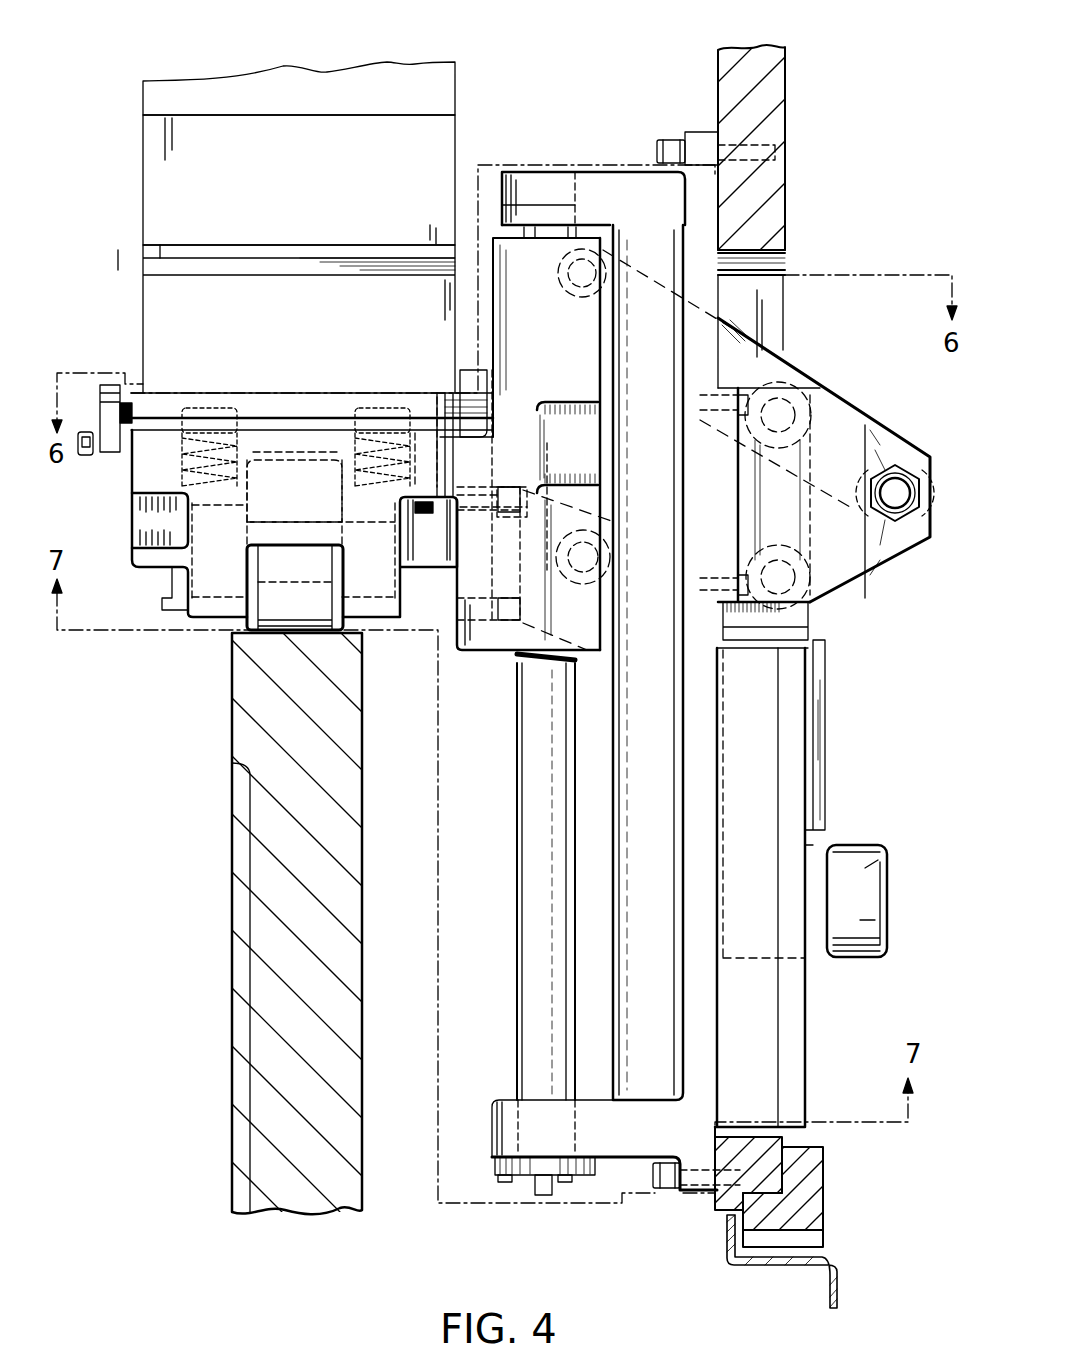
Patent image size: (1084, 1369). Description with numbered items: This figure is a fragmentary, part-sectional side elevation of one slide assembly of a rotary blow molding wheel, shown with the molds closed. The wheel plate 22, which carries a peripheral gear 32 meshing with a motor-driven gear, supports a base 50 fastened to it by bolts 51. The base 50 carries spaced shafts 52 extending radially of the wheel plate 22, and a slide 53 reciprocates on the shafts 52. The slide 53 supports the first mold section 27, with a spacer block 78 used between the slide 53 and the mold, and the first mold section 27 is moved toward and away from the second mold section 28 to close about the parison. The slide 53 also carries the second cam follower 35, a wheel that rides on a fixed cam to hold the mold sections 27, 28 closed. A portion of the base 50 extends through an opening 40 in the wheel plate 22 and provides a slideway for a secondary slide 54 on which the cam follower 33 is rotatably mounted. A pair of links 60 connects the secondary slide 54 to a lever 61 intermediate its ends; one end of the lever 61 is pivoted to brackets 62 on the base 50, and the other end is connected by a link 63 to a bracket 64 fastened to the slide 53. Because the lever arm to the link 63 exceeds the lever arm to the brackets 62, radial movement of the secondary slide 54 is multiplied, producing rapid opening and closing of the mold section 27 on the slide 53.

The wheel plate 22 is at (765, 90).
The first mold section 27 is at (303, 181).
The second mold section 28 is at (303, 102).
The spacer block 78 is at (305, 337).
The gear 32 is at (790, 1212).
The cam follower 33 is at (867, 867).
The second cam follower 35 is at (258, 632).
The opening 40 is at (773, 270).
The base 50 is at (605, 195).
The bolts 51 is at (672, 150).
The shafts 52 is at (540, 820).
The slide 53 is at (473, 638).
The secondary slide 54 is at (820, 743).
The links 60 is at (814, 545).
The lever 61 is at (742, 368).
The brackets 62 is at (887, 542).
The link 63 is at (542, 335).
The bracket 64 is at (588, 652).